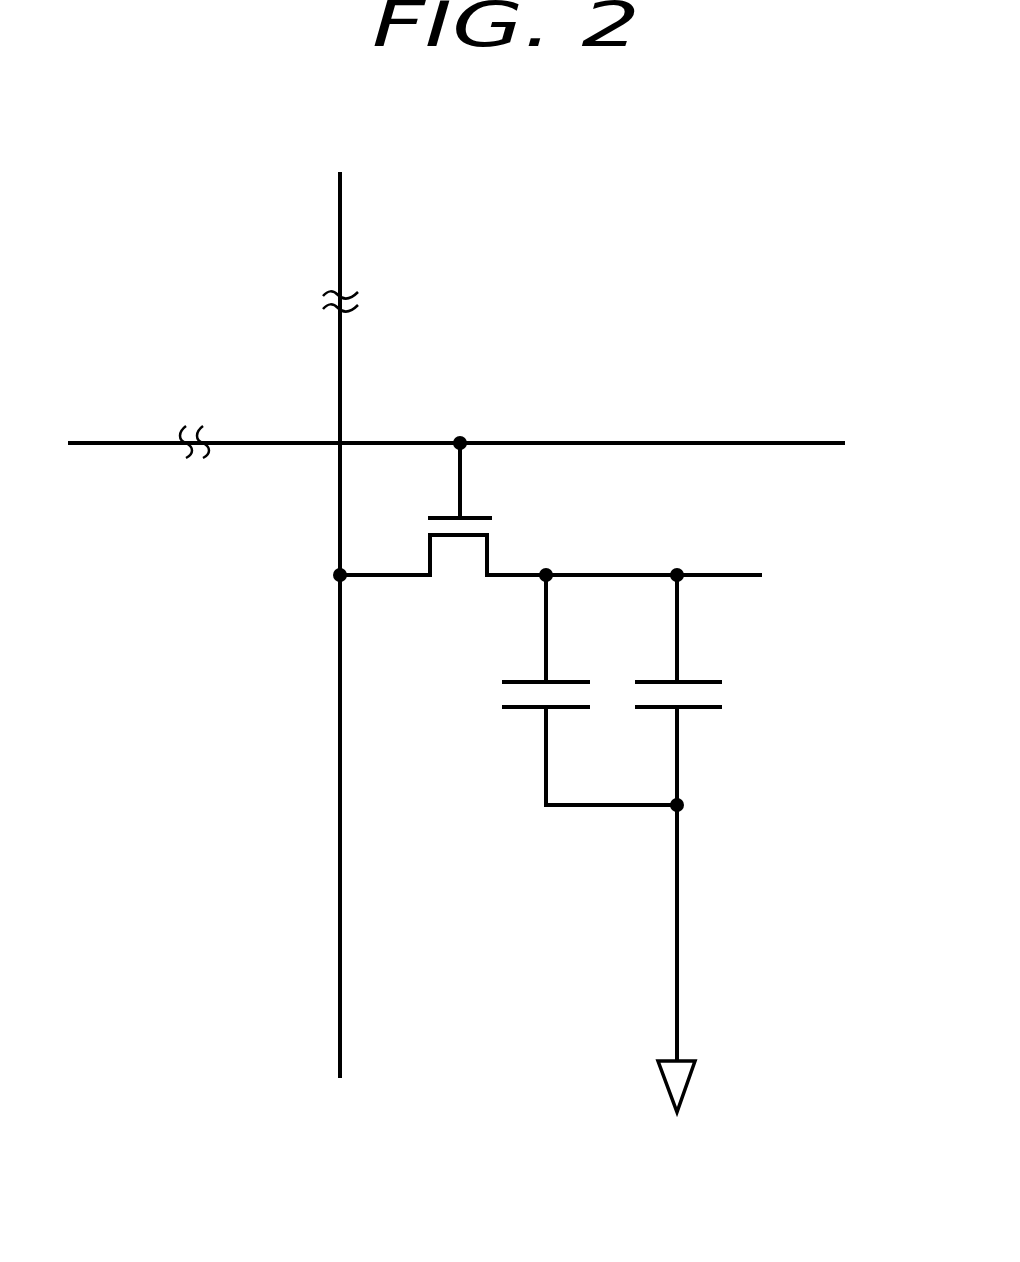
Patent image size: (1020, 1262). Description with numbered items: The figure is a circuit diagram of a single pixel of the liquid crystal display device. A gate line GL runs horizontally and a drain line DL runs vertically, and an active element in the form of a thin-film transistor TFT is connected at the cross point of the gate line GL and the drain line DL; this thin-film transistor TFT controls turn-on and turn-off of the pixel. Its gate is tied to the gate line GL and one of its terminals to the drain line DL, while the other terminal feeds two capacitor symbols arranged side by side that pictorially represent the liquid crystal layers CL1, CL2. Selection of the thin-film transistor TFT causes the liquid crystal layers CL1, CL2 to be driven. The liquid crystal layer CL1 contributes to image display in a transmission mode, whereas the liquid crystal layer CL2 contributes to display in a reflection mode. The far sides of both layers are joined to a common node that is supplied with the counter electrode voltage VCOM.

The drain line DL is at (340, 770).
The gate line GL is at (697, 443).
The thin-film transistor TFT is at (498, 525).
The liquid crystal layer CL1 is at (549, 686).
The liquid crystal layer CL2 is at (735, 690).
The counter electrode voltage VCOM is at (693, 987).